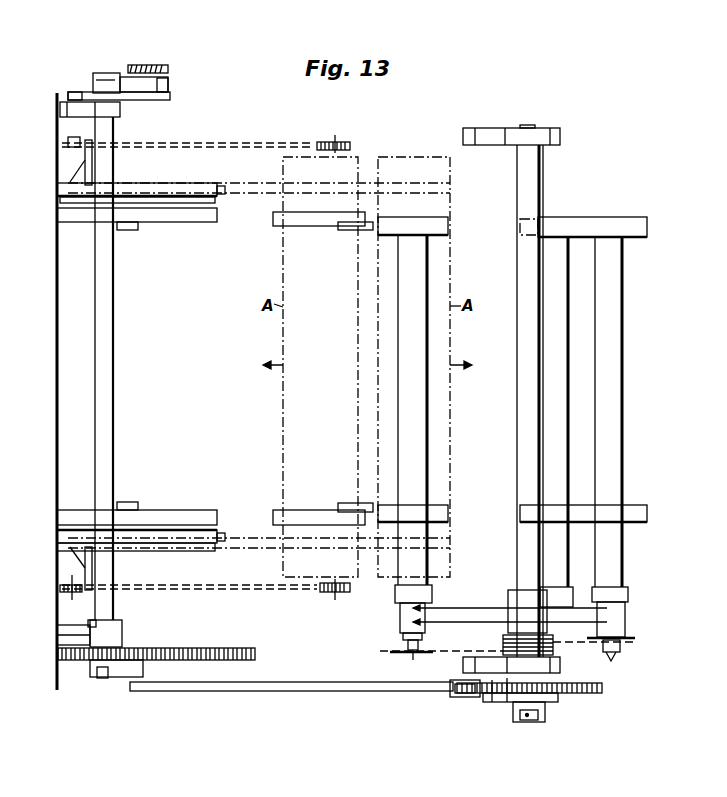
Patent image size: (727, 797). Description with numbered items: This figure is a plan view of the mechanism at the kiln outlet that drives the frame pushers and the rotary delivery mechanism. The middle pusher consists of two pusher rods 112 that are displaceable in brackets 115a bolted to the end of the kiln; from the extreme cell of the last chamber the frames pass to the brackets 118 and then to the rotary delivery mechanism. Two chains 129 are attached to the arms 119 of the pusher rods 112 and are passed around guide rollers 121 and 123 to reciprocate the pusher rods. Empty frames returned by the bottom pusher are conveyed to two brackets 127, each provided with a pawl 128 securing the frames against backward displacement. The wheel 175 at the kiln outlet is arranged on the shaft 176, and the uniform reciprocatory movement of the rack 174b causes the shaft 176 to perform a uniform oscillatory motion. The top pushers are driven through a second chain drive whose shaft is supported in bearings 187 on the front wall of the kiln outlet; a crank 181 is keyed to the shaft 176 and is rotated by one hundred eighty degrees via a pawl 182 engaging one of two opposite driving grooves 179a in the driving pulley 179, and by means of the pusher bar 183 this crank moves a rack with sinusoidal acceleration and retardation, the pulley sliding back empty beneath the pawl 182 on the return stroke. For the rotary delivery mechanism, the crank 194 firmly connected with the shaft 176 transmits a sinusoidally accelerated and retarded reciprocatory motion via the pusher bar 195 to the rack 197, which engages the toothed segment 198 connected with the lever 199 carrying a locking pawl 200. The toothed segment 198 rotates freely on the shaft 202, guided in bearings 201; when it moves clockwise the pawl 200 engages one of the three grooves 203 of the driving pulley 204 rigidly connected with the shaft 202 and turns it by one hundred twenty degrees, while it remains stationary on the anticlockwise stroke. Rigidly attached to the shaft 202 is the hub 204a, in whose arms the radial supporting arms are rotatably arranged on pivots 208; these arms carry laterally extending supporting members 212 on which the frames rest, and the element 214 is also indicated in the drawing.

The pusher rods 112 is at (147, 186).
The brackets 115a is at (193, 180).
The brackets 118 is at (190, 222).
The arms 119 is at (92, 168).
The guide roller 121 is at (72, 592).
The guide roller 123 is at (341, 147).
The brackets 127 is at (277, 225).
The pawl 128 is at (370, 230).
The chains 129 is at (220, 145).
The rack 174b is at (198, 648).
The wheel 175 is at (82, 661).
The shaft 176 is at (114, 280).
The driving pulley 179 is at (82, 92).
The driving grooves 179a is at (69, 92).
The crank 181 is at (170, 86).
The pawl 182 is at (158, 95).
The pusher bar 183 is at (150, 65).
The bearings 187 is at (119, 116).
The crank 194 is at (125, 674).
The pusher bar 195 is at (178, 684).
The rack 197 is at (603, 690).
The toothed segment 198 is at (507, 702).
The lever 199 is at (478, 692).
The locking pawl 200 is at (492, 702).
The bearings 201 is at (562, 133).
The shaft 202 is at (517, 283).
The grooves 203 is at (558, 698).
The driving pulley 204 is at (545, 706).
The hub 204a is at (508, 596).
The pivots 208 is at (612, 653).
The supporting members 212 is at (448, 224).
The stop plate 214 is at (447, 654).